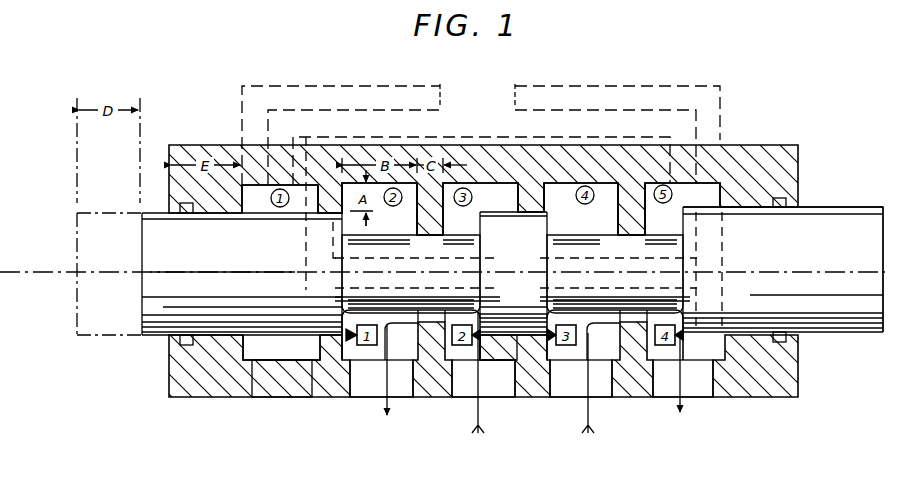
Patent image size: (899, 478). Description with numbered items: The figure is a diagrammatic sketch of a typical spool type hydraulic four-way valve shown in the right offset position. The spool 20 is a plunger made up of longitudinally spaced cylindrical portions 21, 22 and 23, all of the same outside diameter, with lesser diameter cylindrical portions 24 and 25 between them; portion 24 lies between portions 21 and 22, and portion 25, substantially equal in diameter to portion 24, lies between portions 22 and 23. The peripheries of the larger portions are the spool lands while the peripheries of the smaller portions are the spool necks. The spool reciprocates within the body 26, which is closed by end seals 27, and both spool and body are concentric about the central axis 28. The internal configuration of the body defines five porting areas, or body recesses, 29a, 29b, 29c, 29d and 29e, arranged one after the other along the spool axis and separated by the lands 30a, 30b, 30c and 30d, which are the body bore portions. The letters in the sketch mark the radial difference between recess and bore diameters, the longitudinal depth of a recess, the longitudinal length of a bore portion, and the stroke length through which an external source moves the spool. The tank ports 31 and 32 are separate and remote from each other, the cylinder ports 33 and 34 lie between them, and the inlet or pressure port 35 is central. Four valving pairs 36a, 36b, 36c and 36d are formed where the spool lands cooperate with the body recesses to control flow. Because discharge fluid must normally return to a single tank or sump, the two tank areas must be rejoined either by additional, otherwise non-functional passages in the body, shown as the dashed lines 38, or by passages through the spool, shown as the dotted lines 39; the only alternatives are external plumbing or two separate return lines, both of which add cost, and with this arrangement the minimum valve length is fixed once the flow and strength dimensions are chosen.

The spool 20 is at (808, 207).
The cylindrical portion 21 is at (244, 263).
The cylindrical portion 22 is at (522, 282).
The cylindrical portion 23 is at (812, 257).
The lesser diameter cylindrical portion 24 is at (408, 281).
The lesser diameter cylindrical portion 25 is at (613, 280).
The body 26 is at (780, 145).
The end seals 27 is at (173, 337).
The central axis 28 is at (40, 273).
The porting area 29a is at (280, 199).
The porting area 29b is at (404, 233).
The porting area 29c is at (474, 229).
The porting area 29d is at (590, 228).
The porting area 29e is at (674, 231).
The land 30a is at (315, 214).
The land 30b is at (428, 212).
The land 30c is at (531, 205).
The land 30d is at (632, 200).
The tank port 31 is at (287, 399).
The tank port 32 is at (672, 399).
The cylinder port 33 is at (372, 399).
The cylinder port 34 is at (580, 399).
The inlet port 35 is at (472, 399).
The valving pair 36a is at (330, 340).
The valving pair 36b is at (432, 338).
The valving pair 36c is at (532, 338).
The valving pair 36d is at (633, 338).
The body passages 38 is at (724, 114).
The spool passages 39 is at (722, 300).